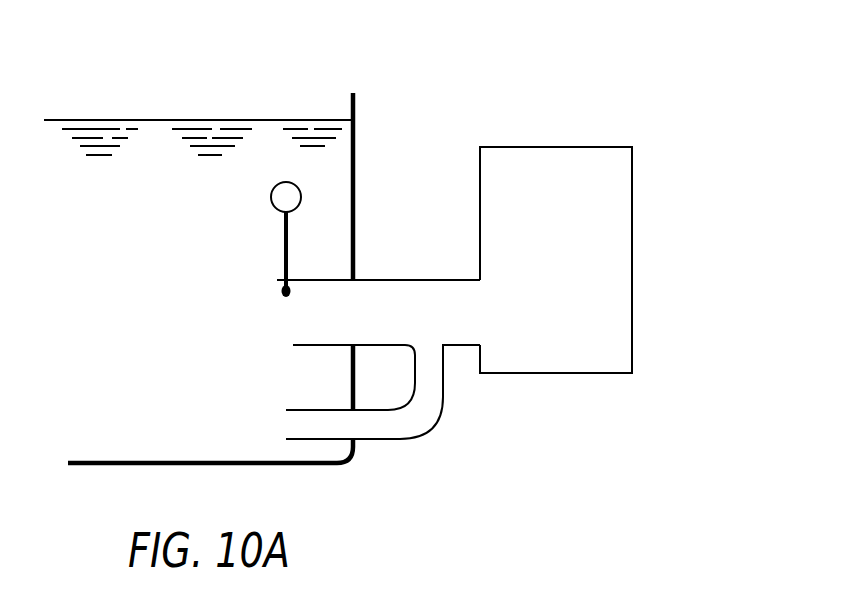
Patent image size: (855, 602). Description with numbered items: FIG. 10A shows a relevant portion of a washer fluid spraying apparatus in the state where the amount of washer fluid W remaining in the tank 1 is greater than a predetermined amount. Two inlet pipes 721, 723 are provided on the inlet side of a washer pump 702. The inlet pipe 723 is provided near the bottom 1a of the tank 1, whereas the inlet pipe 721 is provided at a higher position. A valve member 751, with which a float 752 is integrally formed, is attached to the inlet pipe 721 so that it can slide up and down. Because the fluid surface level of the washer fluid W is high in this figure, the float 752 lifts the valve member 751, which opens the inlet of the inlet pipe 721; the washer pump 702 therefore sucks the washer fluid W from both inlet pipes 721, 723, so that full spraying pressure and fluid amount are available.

The washer fluid W is at (148, 155).
The tank 1 is at (356, 150).
The bottom of the tank 1a is at (167, 463).
The inlet pipe 721 is at (380, 278).
The washer pump 702 is at (632, 193).
The inlet pipe 723 is at (418, 436).
The valve member 751 is at (282, 251).
The float 752 is at (270, 196).